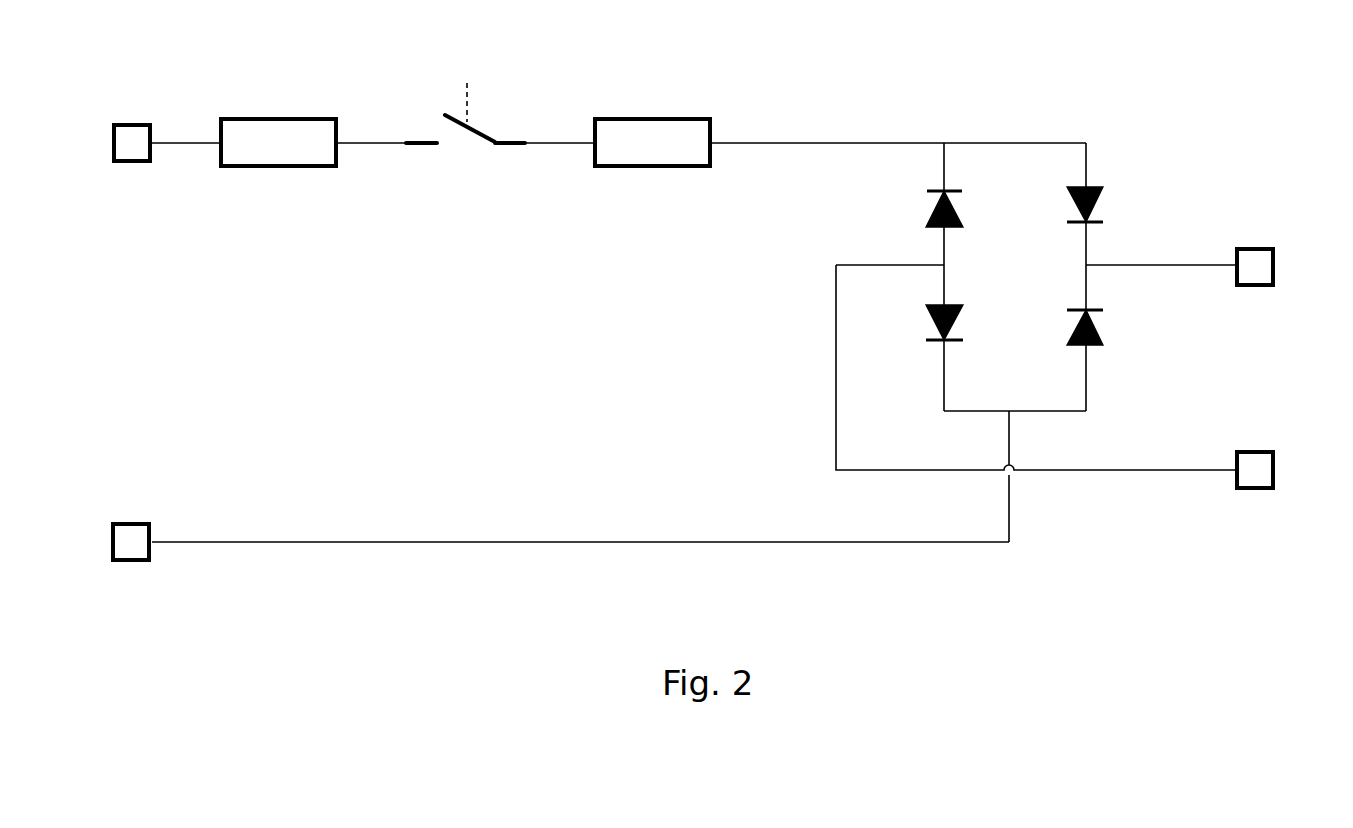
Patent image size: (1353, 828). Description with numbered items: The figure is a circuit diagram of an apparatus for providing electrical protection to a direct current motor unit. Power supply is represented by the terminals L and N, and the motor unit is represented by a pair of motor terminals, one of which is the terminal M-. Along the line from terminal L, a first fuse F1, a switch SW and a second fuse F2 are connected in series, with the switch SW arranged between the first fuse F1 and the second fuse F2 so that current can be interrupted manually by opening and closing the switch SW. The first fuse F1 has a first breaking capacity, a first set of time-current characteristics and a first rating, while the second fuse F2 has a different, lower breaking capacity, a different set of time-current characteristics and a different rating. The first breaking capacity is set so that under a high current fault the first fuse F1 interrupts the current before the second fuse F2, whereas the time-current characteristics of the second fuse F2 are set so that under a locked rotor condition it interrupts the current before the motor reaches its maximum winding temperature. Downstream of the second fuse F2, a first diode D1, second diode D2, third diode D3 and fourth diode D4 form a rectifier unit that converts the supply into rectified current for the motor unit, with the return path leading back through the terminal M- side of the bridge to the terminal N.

The terminal L is at (111, 143).
The terminal N is at (111, 542).
The first fuse F1 is at (278, 120).
The second fuse F2 is at (652, 121).
The switch SW is at (465, 89).
The first diode D1 is at (969, 209).
The second diode D2 is at (1113, 204).
The third diode D3 is at (969, 322).
The fourth diode D4 is at (1113, 327).
The terminal M- is at (1279, 470).